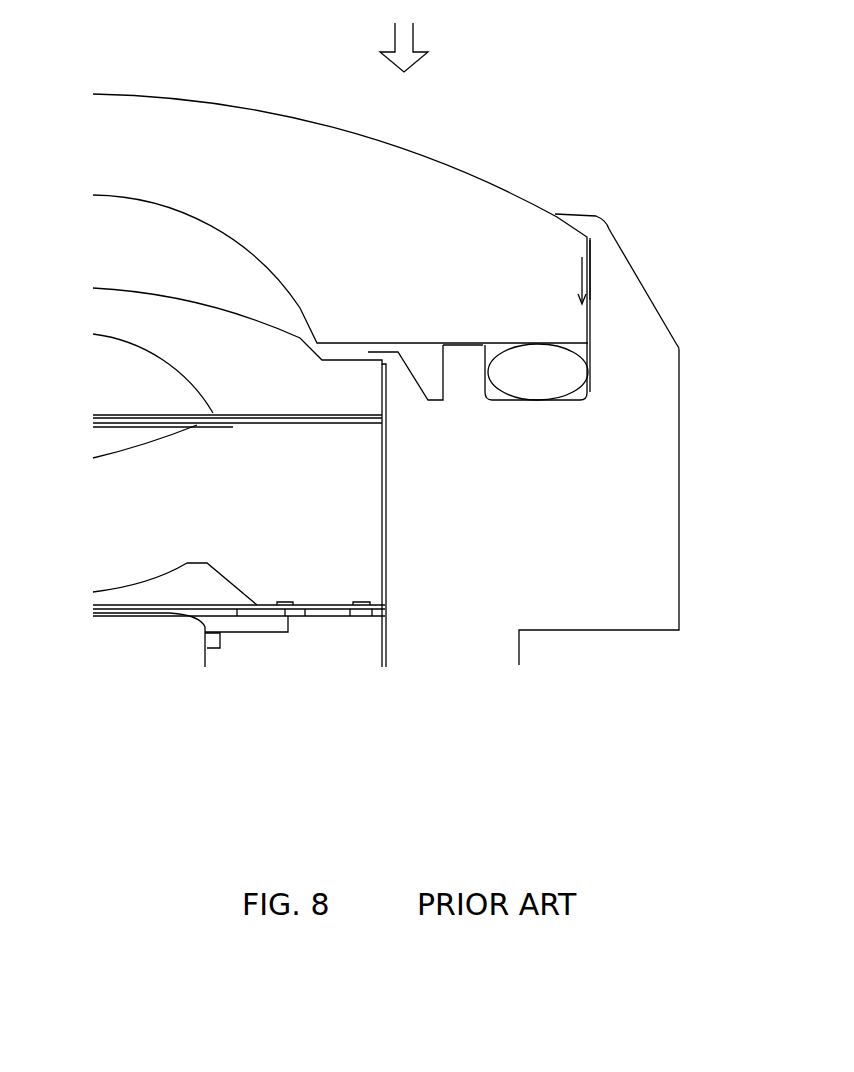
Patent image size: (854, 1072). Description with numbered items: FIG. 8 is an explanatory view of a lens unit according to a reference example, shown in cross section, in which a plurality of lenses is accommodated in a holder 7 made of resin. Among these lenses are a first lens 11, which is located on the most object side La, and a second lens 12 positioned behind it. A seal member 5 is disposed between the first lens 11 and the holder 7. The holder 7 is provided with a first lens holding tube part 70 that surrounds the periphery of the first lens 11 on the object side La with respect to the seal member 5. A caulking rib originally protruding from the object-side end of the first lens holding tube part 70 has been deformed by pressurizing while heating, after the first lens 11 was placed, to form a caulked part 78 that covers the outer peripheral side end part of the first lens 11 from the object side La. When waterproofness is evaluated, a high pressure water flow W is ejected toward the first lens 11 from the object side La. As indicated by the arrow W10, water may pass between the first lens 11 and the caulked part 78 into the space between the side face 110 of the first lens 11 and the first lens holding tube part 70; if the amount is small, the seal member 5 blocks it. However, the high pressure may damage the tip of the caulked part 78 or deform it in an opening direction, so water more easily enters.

The seal member 5 is at (576, 375).
The holder 7 is at (657, 503).
The first lens 11 is at (253, 130).
The second lens 12 is at (124, 298).
The first lens holding tube part 70 is at (634, 308).
The caulked part 78 is at (578, 222).
The side face of the first lens 110 is at (589, 256).
The object side La is at (208, 30).
The high pressure water flow W is at (414, 47).
The arrow indicating water entry path W10 is at (562, 280).